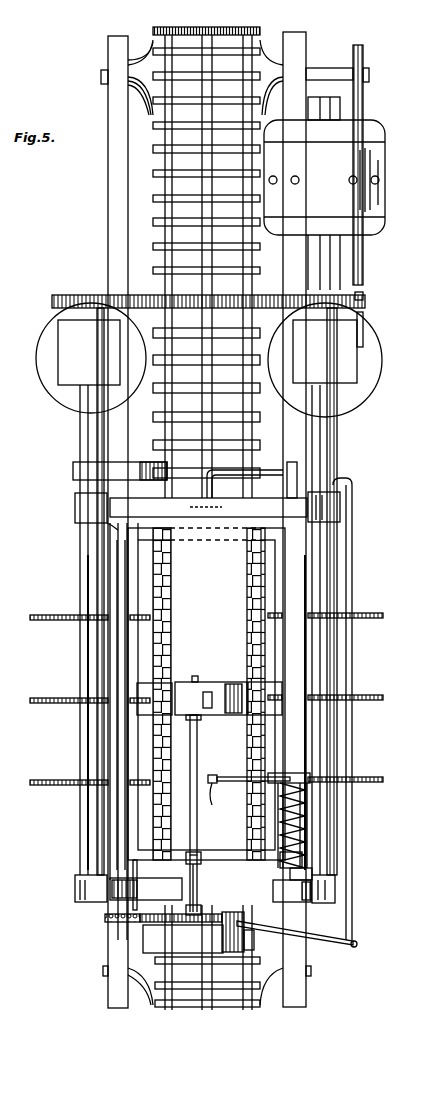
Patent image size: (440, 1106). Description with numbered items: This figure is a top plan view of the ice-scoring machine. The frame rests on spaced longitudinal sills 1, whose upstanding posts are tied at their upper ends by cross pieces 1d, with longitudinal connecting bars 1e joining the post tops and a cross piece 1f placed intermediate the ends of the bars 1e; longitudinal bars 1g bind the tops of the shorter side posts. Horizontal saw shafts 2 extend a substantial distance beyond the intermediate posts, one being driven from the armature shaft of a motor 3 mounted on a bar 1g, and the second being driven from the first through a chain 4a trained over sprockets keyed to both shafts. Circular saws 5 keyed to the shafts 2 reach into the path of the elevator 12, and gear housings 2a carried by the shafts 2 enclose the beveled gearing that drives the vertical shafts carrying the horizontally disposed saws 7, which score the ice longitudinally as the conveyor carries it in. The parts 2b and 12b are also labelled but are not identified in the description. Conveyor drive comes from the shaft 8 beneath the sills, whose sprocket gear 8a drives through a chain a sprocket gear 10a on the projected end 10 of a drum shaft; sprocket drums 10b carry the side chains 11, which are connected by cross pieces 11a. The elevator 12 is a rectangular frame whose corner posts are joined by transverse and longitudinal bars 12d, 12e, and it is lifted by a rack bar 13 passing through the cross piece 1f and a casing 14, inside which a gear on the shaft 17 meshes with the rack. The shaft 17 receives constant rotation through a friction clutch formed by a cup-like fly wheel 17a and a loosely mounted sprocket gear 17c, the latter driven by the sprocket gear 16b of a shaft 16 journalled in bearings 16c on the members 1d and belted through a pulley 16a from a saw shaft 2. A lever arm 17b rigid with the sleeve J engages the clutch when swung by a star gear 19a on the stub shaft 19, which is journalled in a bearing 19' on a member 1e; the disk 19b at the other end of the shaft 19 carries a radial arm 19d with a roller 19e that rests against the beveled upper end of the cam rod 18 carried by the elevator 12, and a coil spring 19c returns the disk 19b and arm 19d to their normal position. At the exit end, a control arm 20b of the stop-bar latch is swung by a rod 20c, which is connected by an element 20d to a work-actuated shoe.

The longitudinal sills 1 is at (310, 956).
The top cross pieces 1d is at (320, 490).
The longitudinal connecting bars 1e is at (110, 594).
The intermediate cross piece 1f is at (145, 698).
The longitudinal bars 1g is at (296, 50).
The saw shafts 2 is at (337, 426).
The gear boxes 2a is at (40, 395).
The bearing block 2b is at (75, 510).
The motor 3 is at (385, 202).
The chain 4a is at (95, 296).
The circular saws 5 is at (44, 620).
The saws 7 is at (44, 334).
The shaft 8 is at (363, 322).
The sprocket gear 8a is at (363, 304).
The projected drum shaft end 10 is at (101, 78).
The sprocket gear 10a is at (363, 58).
The sprocket drums 10b is at (140, 58).
The side chains 11 is at (165, 190).
The cross pieces 11a is at (155, 172).
The elevator 12 is at (360, 666).
The carriage block 12b is at (312, 874).
The transverse bars 12d is at (160, 870).
The longitudinal bars 12e is at (140, 636).
The rack bar 13 is at (212, 690).
The casing 14 is at (195, 676).
The shaft 16 is at (120, 656).
The pulley 16a is at (85, 470).
The sprocket gear 16b is at (105, 917).
The bearings 16c is at (108, 528).
The shaft 17 is at (198, 738).
The cup-like fly wheel 17a is at (148, 940).
The lever arm 17b is at (226, 870).
The sprocket gear 17c is at (145, 922).
The cam rod 18 is at (207, 861).
The stub shaft 19 is at (328, 825).
The star gear 19a is at (311, 900).
The disk 19b is at (310, 776).
The coil spring 19c is at (300, 828).
The radial arm 19d is at (234, 785).
The roller 19e is at (222, 772).
The bearing 19' is at (326, 859).
The control arm 20b is at (356, 948).
The rod 20c is at (225, 509).
The connecting element 20d is at (292, 466).
The sleeve J is at (202, 932).